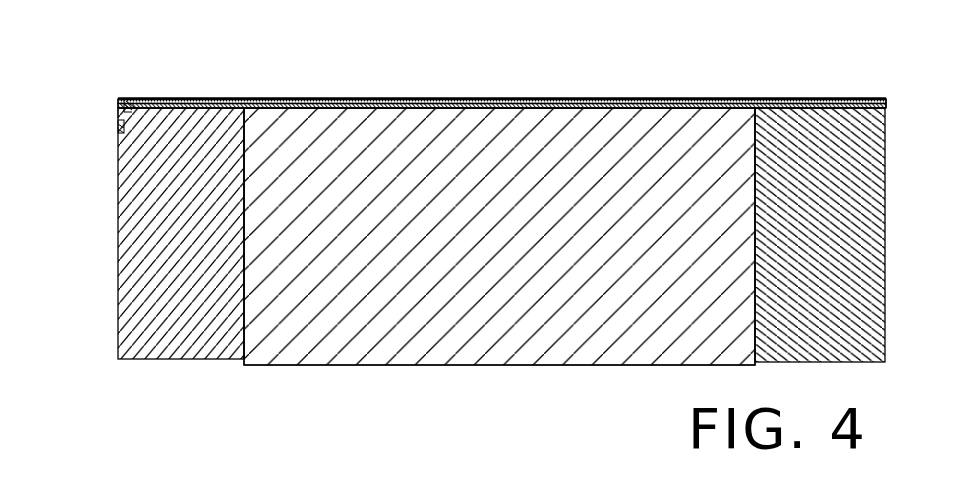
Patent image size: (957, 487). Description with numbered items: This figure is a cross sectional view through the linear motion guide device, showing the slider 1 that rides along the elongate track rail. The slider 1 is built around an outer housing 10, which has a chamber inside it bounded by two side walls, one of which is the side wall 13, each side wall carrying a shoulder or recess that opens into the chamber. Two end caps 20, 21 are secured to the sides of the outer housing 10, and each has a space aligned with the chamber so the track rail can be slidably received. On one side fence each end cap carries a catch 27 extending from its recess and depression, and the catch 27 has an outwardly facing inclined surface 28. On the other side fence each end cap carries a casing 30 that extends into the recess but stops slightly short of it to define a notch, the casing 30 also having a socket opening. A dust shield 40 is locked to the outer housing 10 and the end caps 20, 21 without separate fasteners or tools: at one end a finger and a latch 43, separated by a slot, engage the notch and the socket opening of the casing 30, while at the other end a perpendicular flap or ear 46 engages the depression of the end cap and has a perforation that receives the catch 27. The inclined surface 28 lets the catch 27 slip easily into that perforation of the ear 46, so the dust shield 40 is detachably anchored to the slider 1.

The slider 1 is at (692, 69).
The outer housing 10 is at (376, 350).
The side wall 13 is at (498, 348).
The end cap 20 is at (868, 232).
The end cap 21 is at (138, 248).
The catch 27 is at (132, 110).
The inclined surface 28 is at (122, 110).
The casing 30 is at (868, 100).
The dust shield 40 is at (345, 97).
The latch 43 is at (880, 100).
The ear 46 is at (120, 130).